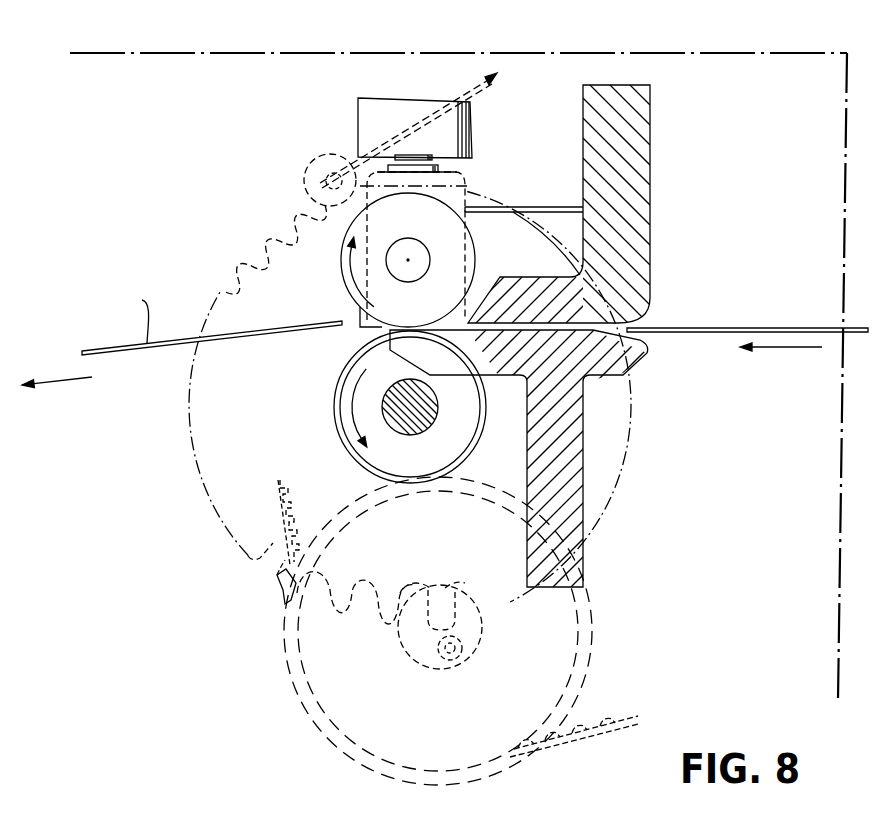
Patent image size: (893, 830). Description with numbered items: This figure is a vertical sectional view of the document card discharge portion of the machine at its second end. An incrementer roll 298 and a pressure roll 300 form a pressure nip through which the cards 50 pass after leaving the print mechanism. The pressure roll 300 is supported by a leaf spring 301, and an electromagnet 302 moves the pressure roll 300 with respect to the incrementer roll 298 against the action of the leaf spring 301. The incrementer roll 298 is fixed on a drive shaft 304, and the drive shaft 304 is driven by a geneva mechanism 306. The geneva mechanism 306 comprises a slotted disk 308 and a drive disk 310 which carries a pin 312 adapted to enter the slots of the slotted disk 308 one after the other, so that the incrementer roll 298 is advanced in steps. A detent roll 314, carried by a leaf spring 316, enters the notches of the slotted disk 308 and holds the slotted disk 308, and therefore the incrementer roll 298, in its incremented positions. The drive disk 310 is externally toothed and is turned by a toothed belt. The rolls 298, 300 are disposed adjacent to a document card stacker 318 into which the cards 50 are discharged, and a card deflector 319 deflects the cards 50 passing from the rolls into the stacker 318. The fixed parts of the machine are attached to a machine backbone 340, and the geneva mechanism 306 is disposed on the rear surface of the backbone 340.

The cards 50 is at (778, 327).
The incrementer roll 298 is at (338, 378).
The pressure roll 300 is at (343, 275).
The leaf spring 301 is at (538, 205).
The electromagnet 302 is at (475, 117).
The drive shaft 304 is at (398, 428).
The geneva mechanism 306 is at (330, 660).
The slotted disk 308 is at (273, 593).
The drive disk 310 is at (480, 632).
The pin 312 is at (433, 672).
The detent roll 314 is at (310, 165).
The leaf spring 316 is at (350, 148).
The document card stacker 318 is at (84, 417).
The card deflector 319 is at (182, 338).
The machine backbone 340 is at (750, 68).